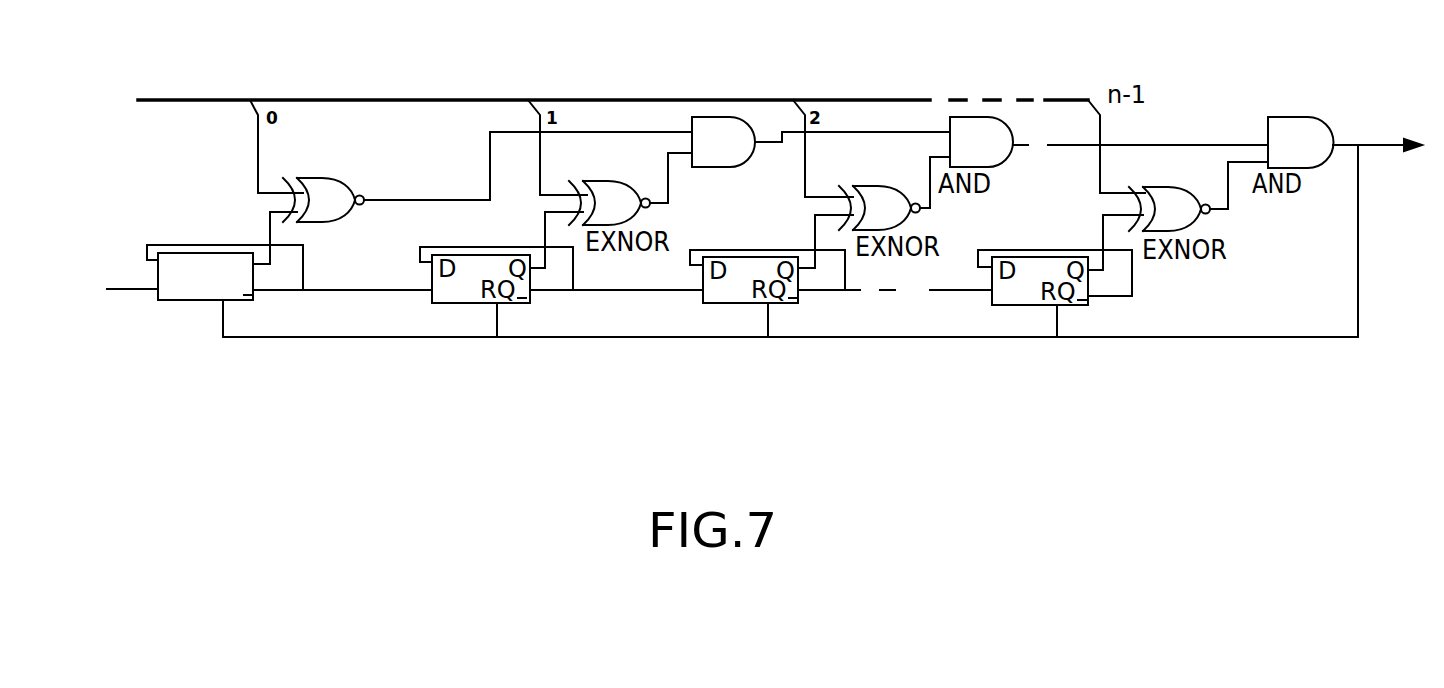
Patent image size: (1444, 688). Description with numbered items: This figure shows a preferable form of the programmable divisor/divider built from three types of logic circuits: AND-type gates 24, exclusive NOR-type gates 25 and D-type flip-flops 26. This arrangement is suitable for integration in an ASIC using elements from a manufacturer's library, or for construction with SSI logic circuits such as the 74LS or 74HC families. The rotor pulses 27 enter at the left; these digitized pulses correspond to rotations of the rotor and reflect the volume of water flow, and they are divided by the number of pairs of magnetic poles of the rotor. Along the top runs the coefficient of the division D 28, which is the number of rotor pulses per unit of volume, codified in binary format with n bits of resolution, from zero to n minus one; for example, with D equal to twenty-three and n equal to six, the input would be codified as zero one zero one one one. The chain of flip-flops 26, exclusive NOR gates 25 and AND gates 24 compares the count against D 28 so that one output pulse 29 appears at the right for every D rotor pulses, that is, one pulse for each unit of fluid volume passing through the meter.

The AND-type gate 24 is at (720, 138).
The exclusive NOR-type gate 25 is at (338, 193).
The D-type flip-flop 26 is at (246, 301).
The rotor pulses 27 is at (113, 289).
The coefficient of the division D 28 is at (330, 100).
The output pulses line 29 is at (1378, 165).